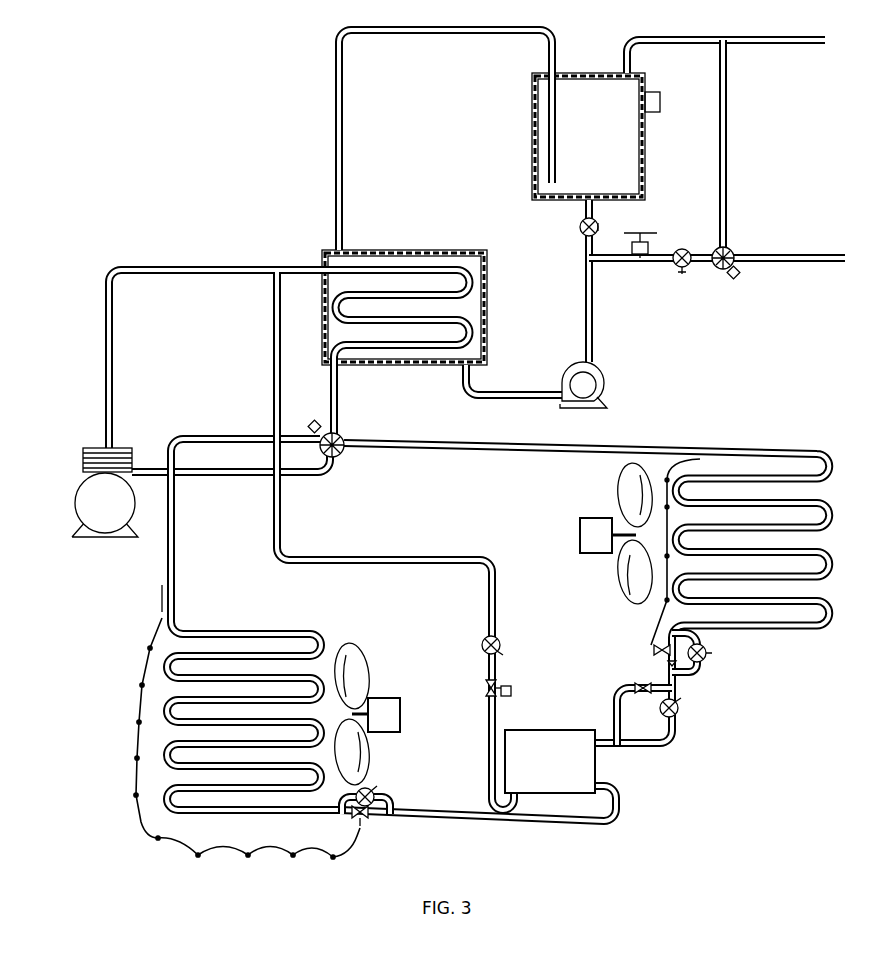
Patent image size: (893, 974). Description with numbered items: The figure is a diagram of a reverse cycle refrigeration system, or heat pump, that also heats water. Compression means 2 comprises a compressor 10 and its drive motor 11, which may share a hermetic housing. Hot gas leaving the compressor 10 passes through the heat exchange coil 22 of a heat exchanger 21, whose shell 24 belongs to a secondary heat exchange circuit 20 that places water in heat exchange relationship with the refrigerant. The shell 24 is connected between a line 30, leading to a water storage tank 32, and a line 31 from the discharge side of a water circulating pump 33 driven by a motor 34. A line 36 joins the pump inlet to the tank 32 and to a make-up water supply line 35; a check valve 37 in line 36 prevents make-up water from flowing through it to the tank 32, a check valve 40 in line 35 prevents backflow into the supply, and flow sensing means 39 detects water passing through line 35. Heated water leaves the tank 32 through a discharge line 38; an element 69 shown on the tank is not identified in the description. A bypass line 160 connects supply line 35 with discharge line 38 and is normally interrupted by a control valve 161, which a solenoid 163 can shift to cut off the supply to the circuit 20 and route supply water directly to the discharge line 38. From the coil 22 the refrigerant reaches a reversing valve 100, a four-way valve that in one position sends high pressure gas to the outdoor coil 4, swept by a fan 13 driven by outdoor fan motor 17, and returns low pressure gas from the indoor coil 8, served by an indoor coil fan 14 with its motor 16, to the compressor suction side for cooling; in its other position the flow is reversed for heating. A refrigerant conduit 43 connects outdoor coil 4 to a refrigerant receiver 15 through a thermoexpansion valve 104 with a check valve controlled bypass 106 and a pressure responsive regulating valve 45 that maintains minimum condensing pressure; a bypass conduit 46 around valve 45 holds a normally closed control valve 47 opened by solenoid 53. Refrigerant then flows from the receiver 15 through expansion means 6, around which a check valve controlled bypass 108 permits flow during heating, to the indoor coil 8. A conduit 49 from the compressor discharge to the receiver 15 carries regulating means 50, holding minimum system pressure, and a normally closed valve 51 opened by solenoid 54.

The compression means 2 is at (92, 492).
The outdoor coil 4 is at (771, 453).
The refrigerant expansion means 6 is at (366, 824).
The indoor coil 8 is at (167, 727).
The compressor 10 is at (88, 470).
The drive motor 11 is at (62, 500).
The condenser fan 13 is at (624, 490).
The indoor coil fan 14 is at (363, 676).
The refrigerant receiver 15 is at (550, 761).
The indoor fan motor 16 is at (376, 715).
The outdoor fan motor 17 is at (608, 535).
The secondary heat exchange circuit 20 is at (333, 47).
The heat exchanger 21 is at (438, 250).
The heat exchange coil 22 is at (478, 300).
The shell 24 is at (487, 268).
The line 30 is at (343, 148).
The line 31 is at (523, 392).
The water storage tank 32 is at (588, 136).
The water circulating pump 33 is at (597, 377).
The drive motor 34 is at (598, 387).
The make-up water supply line 35 is at (792, 265).
The line 36 is at (584, 251).
The check valve 37 is at (582, 234).
The discharge line 38 is at (703, 38).
The flow sensing means 39 is at (648, 246).
The check valve 40 is at (683, 248).
The refrigerant conduit 43 is at (678, 684).
The regulating means 45 is at (679, 710).
The bypass conduit 46 is at (612, 724).
The control valve 47 is at (647, 694).
The conduit 49 is at (496, 733).
The regulating means 50 is at (488, 641).
The control valve 51 is at (483, 688).
The solenoid 53 is at (640, 682).
The solenoid 54 is at (512, 694).
The tank fitting 69 is at (660, 101).
The reversing mechanism 100 is at (340, 452).
The thermoexpansion valve 104 is at (656, 647).
The check valve controlled bypass 106 is at (711, 640).
The check valve controlled bypass 108 is at (374, 792).
The bypass line 160 is at (728, 140).
The control valve 161 is at (714, 270).
The solenoid 163 is at (736, 278).